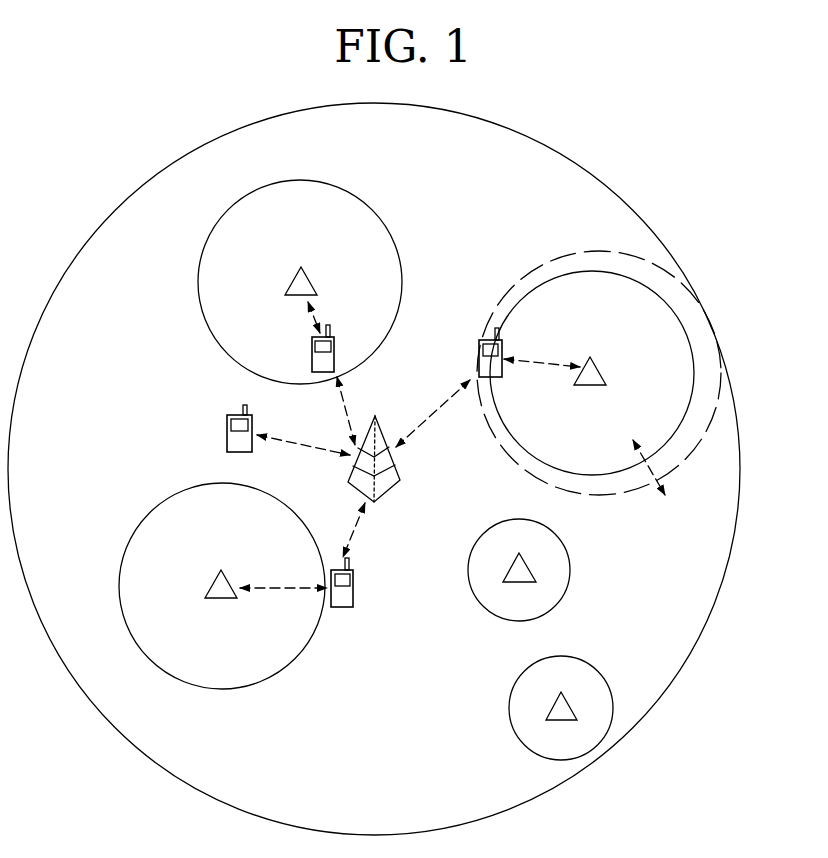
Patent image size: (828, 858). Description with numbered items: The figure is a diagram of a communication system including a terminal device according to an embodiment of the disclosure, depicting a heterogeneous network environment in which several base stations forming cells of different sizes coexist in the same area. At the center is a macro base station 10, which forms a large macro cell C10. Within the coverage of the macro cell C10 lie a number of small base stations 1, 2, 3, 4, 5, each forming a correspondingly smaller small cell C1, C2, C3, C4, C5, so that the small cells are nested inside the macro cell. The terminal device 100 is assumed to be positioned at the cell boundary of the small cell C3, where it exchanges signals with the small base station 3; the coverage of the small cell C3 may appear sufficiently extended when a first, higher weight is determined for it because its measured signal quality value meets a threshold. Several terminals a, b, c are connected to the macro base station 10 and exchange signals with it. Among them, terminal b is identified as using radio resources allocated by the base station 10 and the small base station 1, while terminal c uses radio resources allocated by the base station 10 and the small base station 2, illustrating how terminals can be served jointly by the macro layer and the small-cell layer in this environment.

The macro cell C10 is at (623, 200).
The small cell C1 is at (198, 285).
The small cell C2 is at (170, 494).
The small cell C3 is at (692, 440).
The small cell C4 is at (570, 568).
The small cell C5 is at (598, 670).
The small base station 1 is at (312, 280).
The small base station 2 is at (233, 581).
The small base station 3 is at (600, 372).
The small base station 4 is at (530, 566).
The small base station 5 is at (569, 705).
The terminal a is at (228, 422).
The terminal b is at (334, 352).
The terminal c is at (353, 588).
The terminal device 100 is at (479, 356).
The macro base station 10 is at (387, 432).